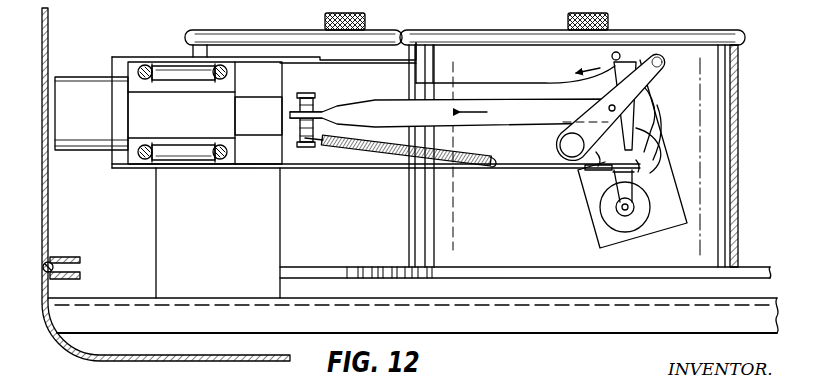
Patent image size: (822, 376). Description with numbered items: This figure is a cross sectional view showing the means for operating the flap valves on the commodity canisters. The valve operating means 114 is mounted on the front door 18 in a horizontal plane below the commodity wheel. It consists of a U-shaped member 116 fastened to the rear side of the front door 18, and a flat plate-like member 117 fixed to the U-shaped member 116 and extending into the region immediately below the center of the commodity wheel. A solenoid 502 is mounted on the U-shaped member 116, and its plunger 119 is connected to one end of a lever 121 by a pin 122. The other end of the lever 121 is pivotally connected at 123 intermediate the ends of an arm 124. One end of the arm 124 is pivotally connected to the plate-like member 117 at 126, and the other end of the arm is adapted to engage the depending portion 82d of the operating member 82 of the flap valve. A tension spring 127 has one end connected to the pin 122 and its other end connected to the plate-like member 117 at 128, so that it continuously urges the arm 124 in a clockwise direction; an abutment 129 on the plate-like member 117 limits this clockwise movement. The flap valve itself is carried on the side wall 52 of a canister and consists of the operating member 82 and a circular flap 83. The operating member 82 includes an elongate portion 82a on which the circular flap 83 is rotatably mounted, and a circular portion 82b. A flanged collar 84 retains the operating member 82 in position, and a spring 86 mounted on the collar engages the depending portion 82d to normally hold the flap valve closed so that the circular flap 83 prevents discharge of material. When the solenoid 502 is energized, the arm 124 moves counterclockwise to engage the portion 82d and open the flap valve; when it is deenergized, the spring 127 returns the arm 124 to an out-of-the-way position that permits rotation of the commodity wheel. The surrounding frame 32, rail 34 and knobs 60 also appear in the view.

The front door 18 is at (170, 352).
The frame 32 is at (380, 28).
The rail 34 is at (747, 266).
The side wall 52 is at (681, 258).
The knob 60 is at (360, 10).
The operating member 82 is at (659, 152).
The elongate portion 82a is at (622, 188).
The circular portion 82b is at (638, 165).
The depending portion 82d is at (655, 59).
The circular flap 83 is at (641, 210).
The flanged collar 84 is at (657, 133).
The spring 86 is at (654, 115).
The valve operating means 114 is at (165, 54).
The U-shaped member 116 is at (253, 164).
The flat plate-like member 117 is at (477, 90).
The plunger 119 is at (257, 127).
The lever 121 is at (376, 107).
The pin 122 is at (305, 93).
The pivotal connection 123 is at (608, 109).
The arm 124 is at (641, 85).
The pivotal connection 126 is at (560, 146).
The tension spring 127 is at (433, 143).
The spring connection 128 is at (488, 167).
The abutment 129 is at (628, 156).
The solenoid 502 is at (96, 90).